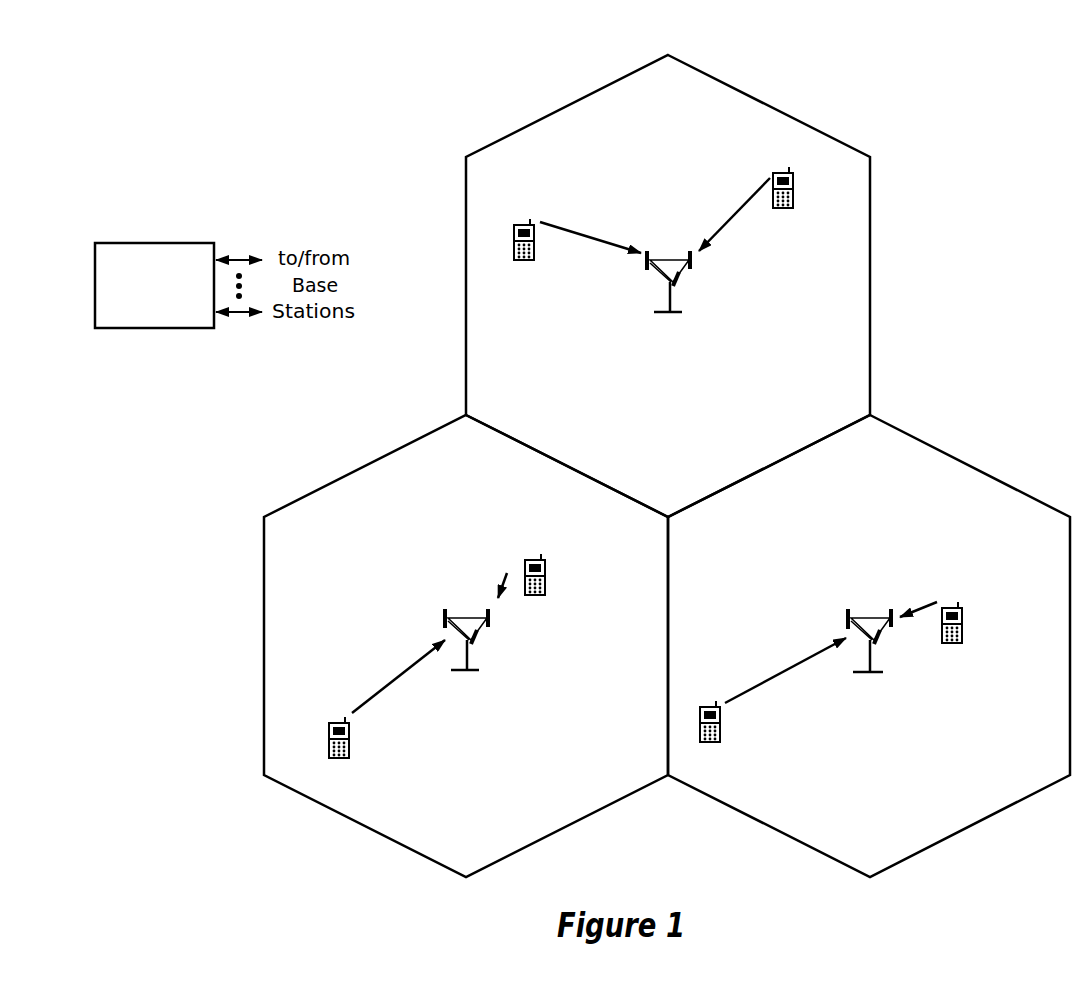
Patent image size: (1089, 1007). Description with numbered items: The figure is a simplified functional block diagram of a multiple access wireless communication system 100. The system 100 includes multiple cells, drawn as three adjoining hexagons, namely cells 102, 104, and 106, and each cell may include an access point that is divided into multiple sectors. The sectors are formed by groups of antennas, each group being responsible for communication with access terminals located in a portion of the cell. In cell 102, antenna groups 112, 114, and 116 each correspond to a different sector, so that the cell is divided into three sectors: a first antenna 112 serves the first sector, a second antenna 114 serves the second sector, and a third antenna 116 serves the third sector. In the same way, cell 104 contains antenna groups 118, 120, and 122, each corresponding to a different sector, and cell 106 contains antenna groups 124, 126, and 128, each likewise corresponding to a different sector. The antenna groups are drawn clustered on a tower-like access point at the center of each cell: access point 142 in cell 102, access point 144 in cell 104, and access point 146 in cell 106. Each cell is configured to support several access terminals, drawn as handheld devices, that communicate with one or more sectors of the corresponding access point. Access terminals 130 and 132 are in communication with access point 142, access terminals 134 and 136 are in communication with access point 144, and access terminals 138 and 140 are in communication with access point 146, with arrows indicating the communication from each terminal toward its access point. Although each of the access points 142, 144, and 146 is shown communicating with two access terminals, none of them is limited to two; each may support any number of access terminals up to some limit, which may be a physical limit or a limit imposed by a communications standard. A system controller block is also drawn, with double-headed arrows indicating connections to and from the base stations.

The multiple access wireless communication system 100 is at (1030, 85).
The cell 102 is at (898, 461).
The cell 104 is at (655, 556).
The cell 106 is at (513, 413).
The first antenna 112 is at (847, 614).
The second antenna 114 is at (880, 640).
The third antenna 116 is at (893, 628).
The antenna group 118 is at (476, 641).
The antenna group 120 is at (490, 622).
The antenna group 122 is at (446, 611).
The antenna group 124 is at (646, 272).
The antenna group 126 is at (679, 283).
The antenna group 128 is at (690, 267).
The access terminal 130 is at (150, 243).
The access terminal 132 is at (707, 707).
The access terminal 134 is at (532, 560).
The access terminal 136 is at (336, 723).
The access terminal 138 is at (521, 225).
The access terminal 140 is at (780, 173).
The access point 142 is at (870, 614).
The access point 144 is at (458, 612).
The access point 146 is at (660, 254).